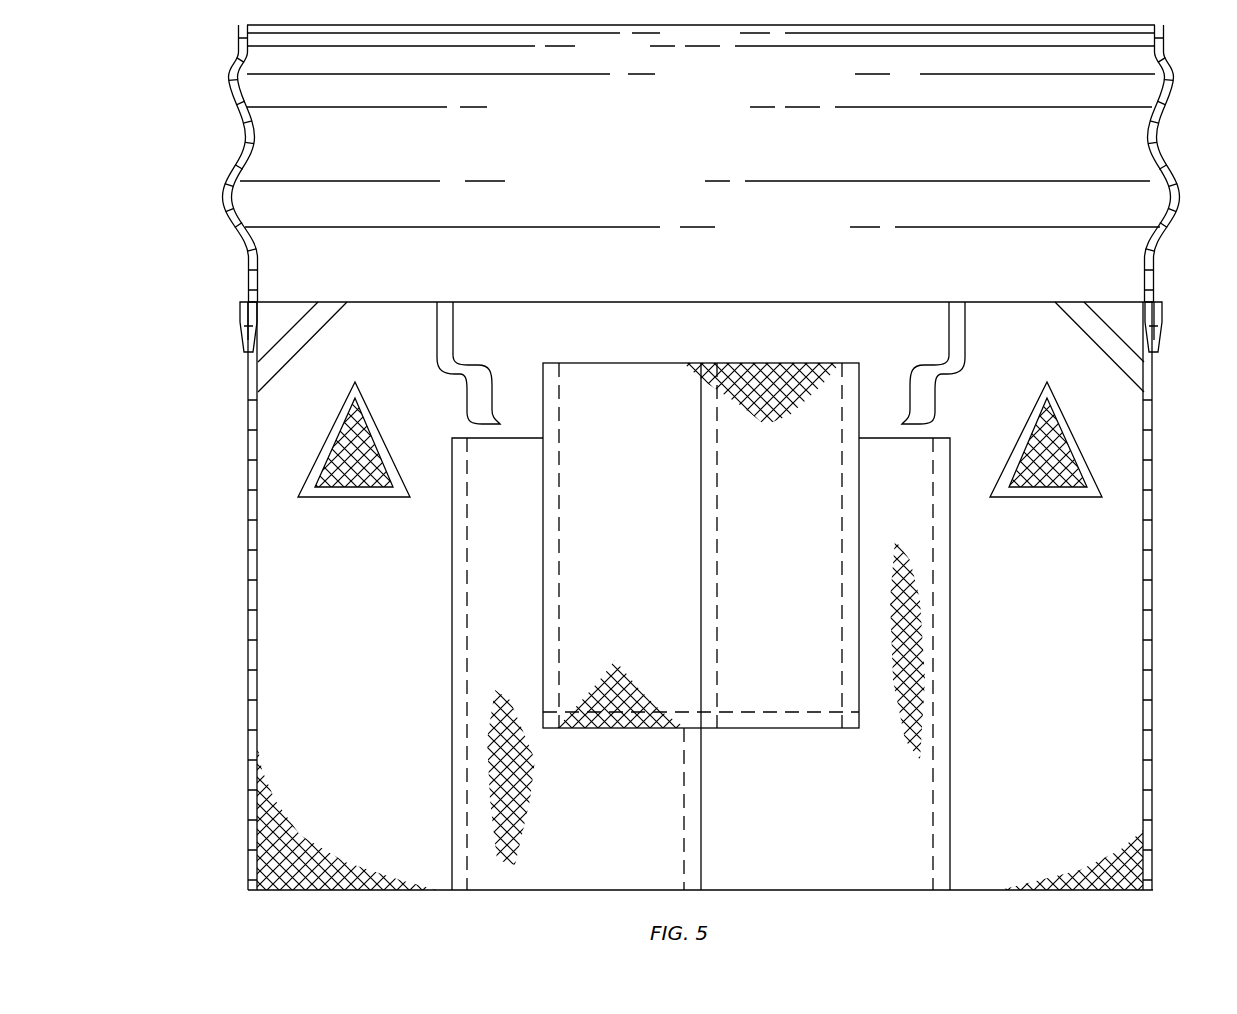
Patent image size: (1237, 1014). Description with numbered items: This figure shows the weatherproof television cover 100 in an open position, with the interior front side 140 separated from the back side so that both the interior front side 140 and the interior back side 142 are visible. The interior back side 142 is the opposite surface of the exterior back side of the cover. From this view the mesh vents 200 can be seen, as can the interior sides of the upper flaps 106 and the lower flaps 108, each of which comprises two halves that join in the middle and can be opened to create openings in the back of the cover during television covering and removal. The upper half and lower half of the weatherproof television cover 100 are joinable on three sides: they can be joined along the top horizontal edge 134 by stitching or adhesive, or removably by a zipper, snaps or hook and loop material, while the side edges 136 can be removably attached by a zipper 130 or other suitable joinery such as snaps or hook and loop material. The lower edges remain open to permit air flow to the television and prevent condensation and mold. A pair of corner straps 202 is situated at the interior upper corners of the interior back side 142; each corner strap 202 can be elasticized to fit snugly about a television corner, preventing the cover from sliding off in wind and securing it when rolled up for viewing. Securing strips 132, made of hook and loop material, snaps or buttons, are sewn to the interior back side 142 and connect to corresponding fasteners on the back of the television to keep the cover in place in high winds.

The weatherproof television cover 100 is at (918, 923).
The upper flaps 106 is at (625, 363).
The lower flaps 108 is at (590, 835).
The zipper 130 is at (243, 150).
The securing strips 132 is at (437, 330).
The top horizontal edge 134 is at (745, 302).
The side edges 136 is at (247, 568).
The interior front side 140 is at (640, 157).
The interior back side 142 is at (365, 662).
The mesh vents 200 is at (382, 432).
The corner straps 202 is at (285, 351).